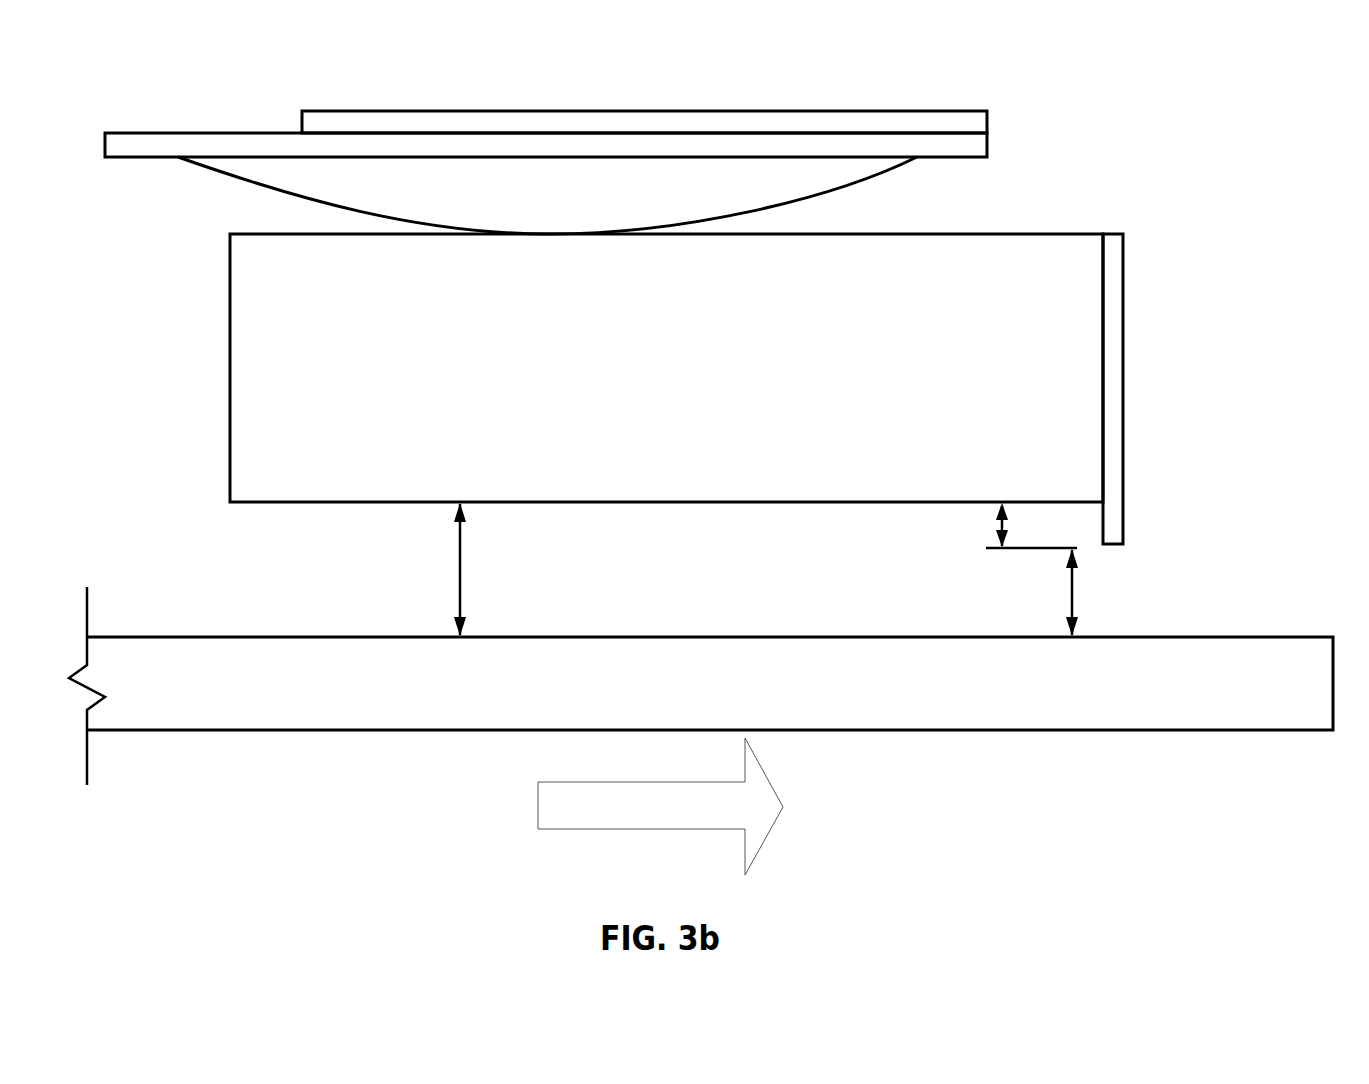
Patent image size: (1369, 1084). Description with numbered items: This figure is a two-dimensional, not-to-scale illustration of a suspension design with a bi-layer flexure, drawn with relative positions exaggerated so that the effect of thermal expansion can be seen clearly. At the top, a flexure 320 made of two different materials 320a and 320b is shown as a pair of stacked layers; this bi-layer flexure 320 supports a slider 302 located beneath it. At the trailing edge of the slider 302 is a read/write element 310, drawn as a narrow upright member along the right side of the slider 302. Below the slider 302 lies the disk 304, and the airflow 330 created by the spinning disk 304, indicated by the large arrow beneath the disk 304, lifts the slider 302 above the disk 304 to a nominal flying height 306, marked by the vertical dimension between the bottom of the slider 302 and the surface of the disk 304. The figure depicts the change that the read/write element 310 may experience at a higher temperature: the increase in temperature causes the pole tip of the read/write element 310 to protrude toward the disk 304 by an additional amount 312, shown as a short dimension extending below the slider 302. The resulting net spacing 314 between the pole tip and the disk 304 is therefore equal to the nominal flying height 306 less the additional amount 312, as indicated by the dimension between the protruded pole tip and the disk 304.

The flexure 320 is at (599, 150).
The first flexure material 320a is at (988, 121).
The second flexure material 320b is at (988, 146).
The slider 302 is at (666, 368).
The read/write element 310 is at (1084, 389).
The additional amount 312 is at (1012, 525).
The net spacing 314 is at (1046, 592).
The nominal flying height 306 is at (441, 569).
The disk 304 is at (701, 686).
The airflow 330 is at (660, 806).